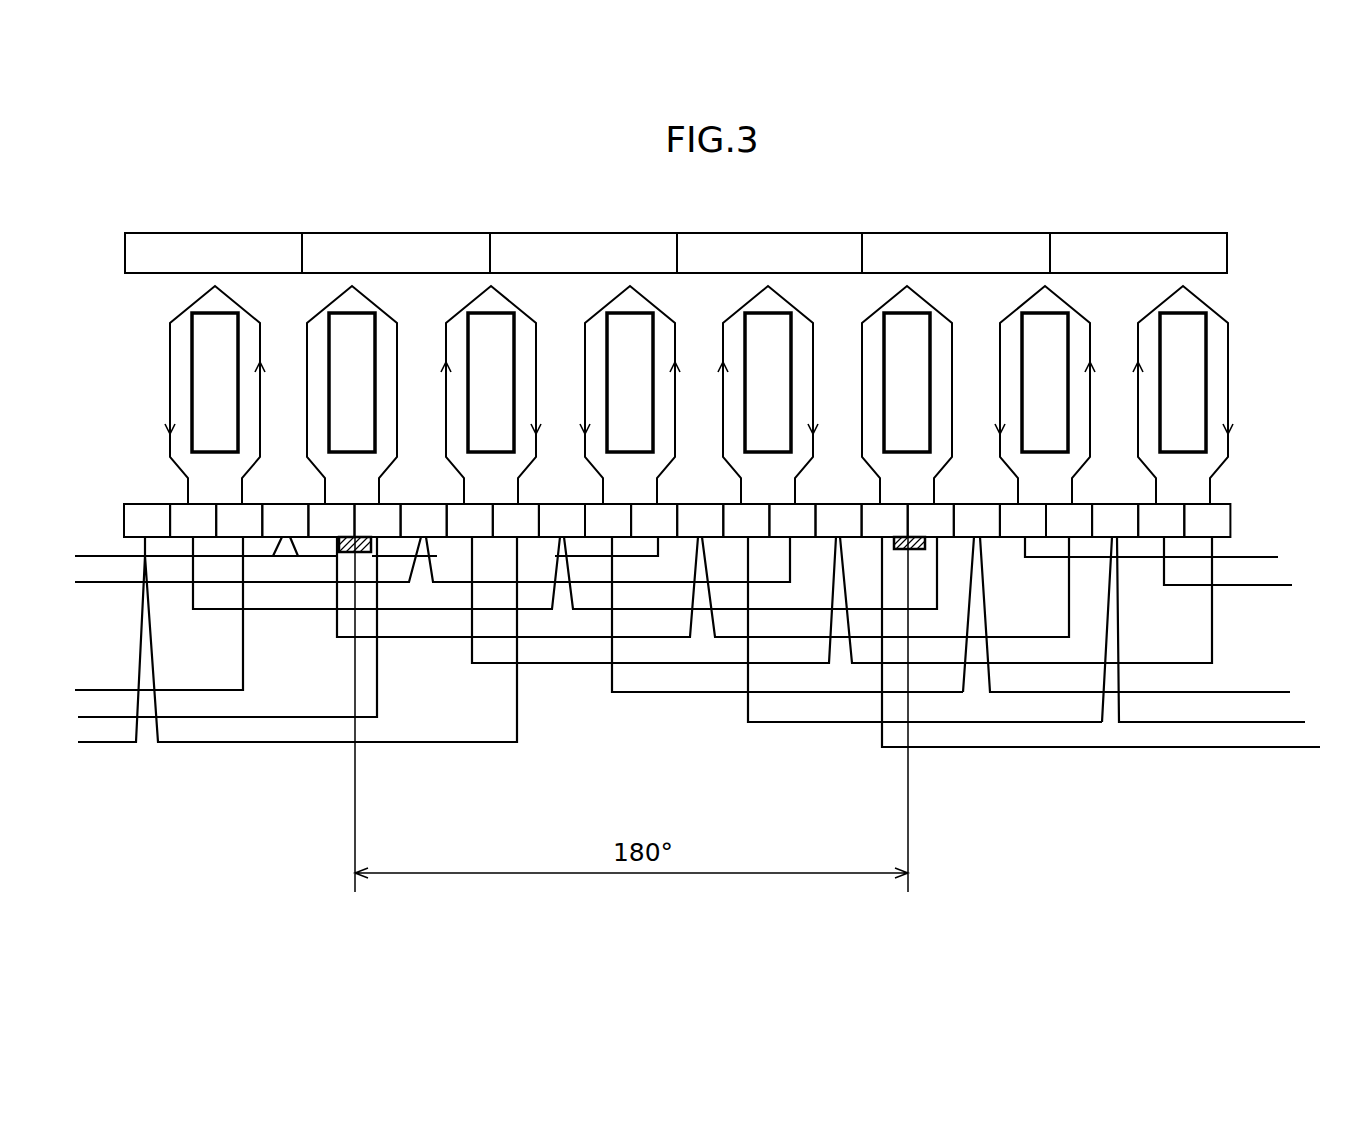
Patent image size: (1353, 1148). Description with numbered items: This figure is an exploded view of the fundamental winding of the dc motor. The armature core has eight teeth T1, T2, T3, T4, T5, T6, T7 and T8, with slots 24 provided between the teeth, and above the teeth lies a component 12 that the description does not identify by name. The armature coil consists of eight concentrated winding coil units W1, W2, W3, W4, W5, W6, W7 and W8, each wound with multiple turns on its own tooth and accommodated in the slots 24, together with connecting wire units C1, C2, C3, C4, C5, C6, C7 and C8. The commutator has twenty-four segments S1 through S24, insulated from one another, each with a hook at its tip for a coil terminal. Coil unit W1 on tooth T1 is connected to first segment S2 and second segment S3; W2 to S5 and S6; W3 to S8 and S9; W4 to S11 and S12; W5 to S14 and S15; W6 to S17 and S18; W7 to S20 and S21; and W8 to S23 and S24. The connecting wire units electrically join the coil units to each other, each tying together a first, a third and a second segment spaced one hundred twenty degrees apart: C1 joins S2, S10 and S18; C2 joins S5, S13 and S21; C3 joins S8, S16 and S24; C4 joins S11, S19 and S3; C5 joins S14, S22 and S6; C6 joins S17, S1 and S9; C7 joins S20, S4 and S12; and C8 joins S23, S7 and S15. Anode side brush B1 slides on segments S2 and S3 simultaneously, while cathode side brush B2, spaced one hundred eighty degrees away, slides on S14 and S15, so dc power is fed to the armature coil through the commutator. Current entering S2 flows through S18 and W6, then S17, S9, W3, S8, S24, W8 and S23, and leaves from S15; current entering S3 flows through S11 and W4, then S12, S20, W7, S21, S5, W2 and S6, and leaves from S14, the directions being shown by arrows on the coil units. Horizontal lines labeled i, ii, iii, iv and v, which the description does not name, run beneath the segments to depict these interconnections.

The permanent magnet 12 is at (1230, 248).
The slots 24 is at (288, 347).
The tooth T1 is at (352, 382).
The tooth T2 is at (491, 382).
The tooth T3 is at (630, 382).
The tooth T4 is at (768, 382).
The tooth T5 is at (907, 382).
The tooth T6 is at (1045, 382).
The tooth T7 is at (1183, 382).
The tooth T8 is at (215, 382).
The concentrated winding coil unit W1 is at (307, 346).
The concentrated winding coil unit W2 is at (446, 346).
The concentrated winding coil unit W3 is at (585, 346).
The concentrated winding coil unit W4 is at (723, 346).
The concentrated winding coil unit W5 is at (862, 346).
The concentrated winding coil unit W6 is at (1000, 346).
The concentrated winding coil unit W7 is at (1138, 346).
The concentrated winding coil unit W8 is at (170, 346).
The connecting wire unit C1 is at (433, 638).
The connecting wire unit C2 is at (582, 663).
The connecting wire unit C3 is at (679, 693).
The connecting wire unit C4 is at (825, 723).
The connecting wire unit C5 is at (967, 750).
The connecting wire unit C6 is at (1253, 557).
The connecting wire unit C7 is at (1253, 585).
The connecting wire unit C8 is at (310, 612).
The anode side brush B1 is at (337, 556).
The cathode side brush B2 is at (912, 548).
The segment S1 is at (285, 520).
The segment S2 is at (331, 520).
The segment S3 is at (378, 520).
The segment S4 is at (424, 520).
The segment S5 is at (470, 520).
The segment S6 is at (516, 520).
The segment S7 is at (562, 520).
The segment S8 is at (608, 520).
The segment S9 is at (654, 520).
The segment S10 is at (700, 520).
The segment S11 is at (746, 520).
The segment S12 is at (792, 520).
The segment S13 is at (839, 520).
The segment S14 is at (885, 520).
The segment S15 is at (931, 520).
The segment S16 is at (977, 520).
The segment S17 is at (1023, 520).
The segment S18 is at (1069, 520).
The segment S19 is at (1115, 520).
The segment S20 is at (1161, 520).
The segment S21 is at (1207, 520).
The segment S22 is at (147, 520).
The segment S23 is at (193, 520).
The segment S24 is at (239, 520).
The equalizer wire i is at (673, 553).
The equalizer wire ii is at (683, 566).
The equalizer wire iii is at (680, 620).
The equalizer wire iv is at (689, 635).
The equalizer wire v is at (697, 648).